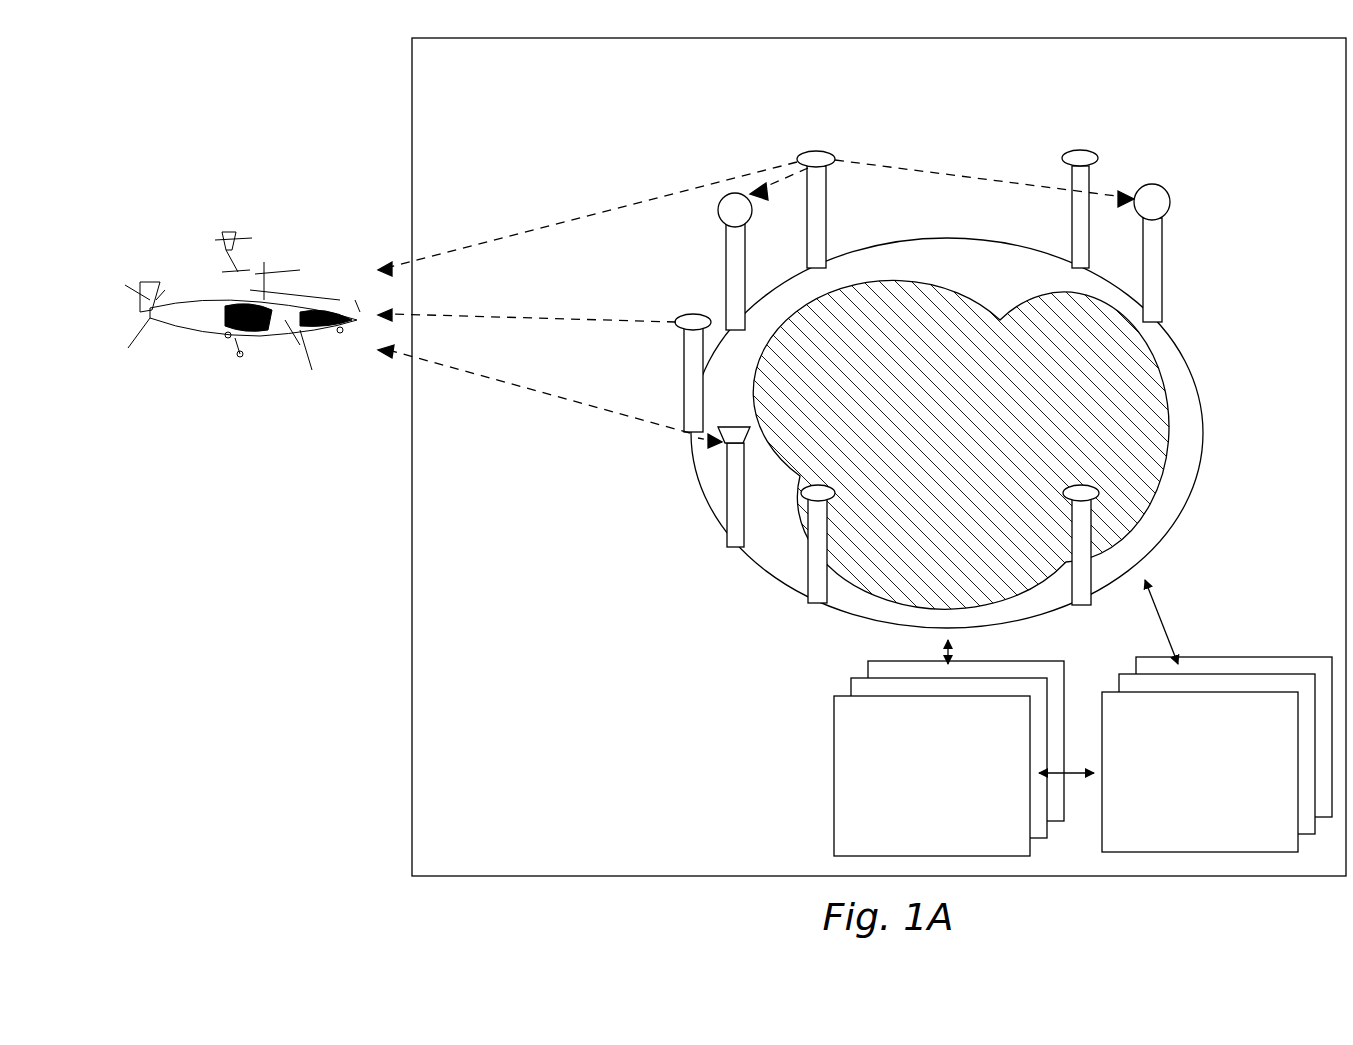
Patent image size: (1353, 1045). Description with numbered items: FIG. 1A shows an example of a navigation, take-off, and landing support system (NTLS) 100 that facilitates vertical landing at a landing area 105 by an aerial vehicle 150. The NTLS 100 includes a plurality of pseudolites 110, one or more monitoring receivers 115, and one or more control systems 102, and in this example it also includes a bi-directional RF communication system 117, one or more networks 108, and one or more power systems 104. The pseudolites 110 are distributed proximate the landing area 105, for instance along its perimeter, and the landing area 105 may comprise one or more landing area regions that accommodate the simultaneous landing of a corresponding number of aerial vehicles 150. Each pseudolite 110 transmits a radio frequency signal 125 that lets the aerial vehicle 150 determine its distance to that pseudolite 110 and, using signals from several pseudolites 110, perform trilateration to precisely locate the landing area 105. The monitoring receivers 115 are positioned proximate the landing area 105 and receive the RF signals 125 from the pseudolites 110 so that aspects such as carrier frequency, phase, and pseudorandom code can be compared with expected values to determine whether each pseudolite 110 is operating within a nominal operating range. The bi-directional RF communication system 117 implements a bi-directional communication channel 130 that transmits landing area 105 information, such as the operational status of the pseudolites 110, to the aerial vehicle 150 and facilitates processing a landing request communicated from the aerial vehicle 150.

The navigation, take-off, and landing support system (NTLS) 100 is at (862, 101).
The control system 102 is at (916, 812).
The power system 104 is at (1184, 809).
The landing area 105 is at (942, 464).
The network 108 is at (1195, 508).
The pseudolite 110 is at (812, 158).
The monitoring receiver 115 is at (724, 212).
The bi-directional RF communication system 117 is at (726, 514).
The RF signal 125 is at (593, 218).
The bi-directional communication channel 130 is at (586, 406).
The aerial vehicle 150 is at (243, 431).